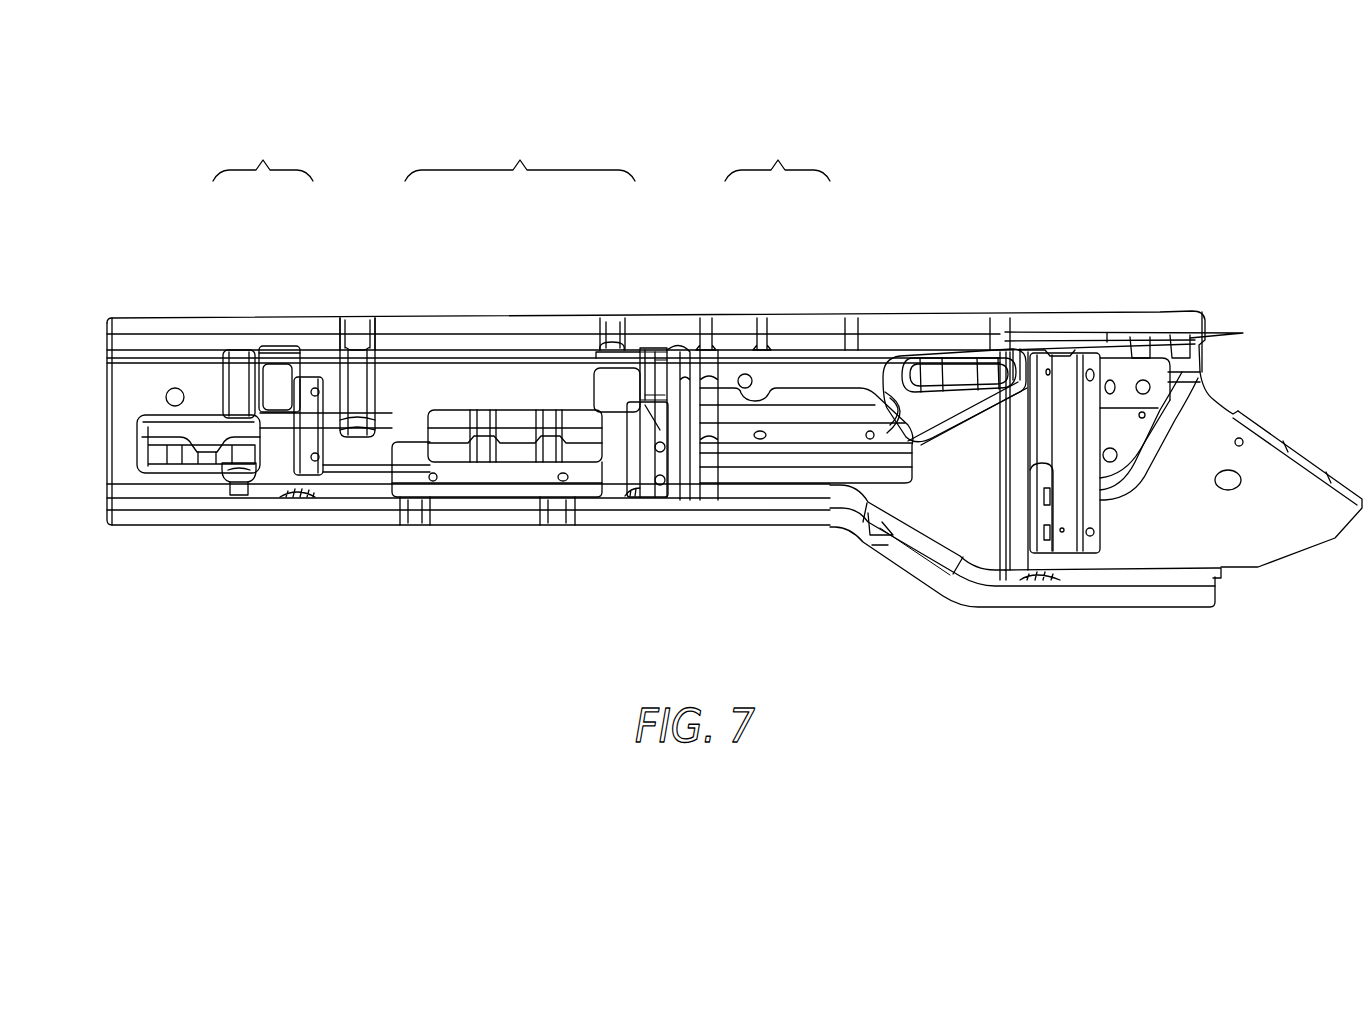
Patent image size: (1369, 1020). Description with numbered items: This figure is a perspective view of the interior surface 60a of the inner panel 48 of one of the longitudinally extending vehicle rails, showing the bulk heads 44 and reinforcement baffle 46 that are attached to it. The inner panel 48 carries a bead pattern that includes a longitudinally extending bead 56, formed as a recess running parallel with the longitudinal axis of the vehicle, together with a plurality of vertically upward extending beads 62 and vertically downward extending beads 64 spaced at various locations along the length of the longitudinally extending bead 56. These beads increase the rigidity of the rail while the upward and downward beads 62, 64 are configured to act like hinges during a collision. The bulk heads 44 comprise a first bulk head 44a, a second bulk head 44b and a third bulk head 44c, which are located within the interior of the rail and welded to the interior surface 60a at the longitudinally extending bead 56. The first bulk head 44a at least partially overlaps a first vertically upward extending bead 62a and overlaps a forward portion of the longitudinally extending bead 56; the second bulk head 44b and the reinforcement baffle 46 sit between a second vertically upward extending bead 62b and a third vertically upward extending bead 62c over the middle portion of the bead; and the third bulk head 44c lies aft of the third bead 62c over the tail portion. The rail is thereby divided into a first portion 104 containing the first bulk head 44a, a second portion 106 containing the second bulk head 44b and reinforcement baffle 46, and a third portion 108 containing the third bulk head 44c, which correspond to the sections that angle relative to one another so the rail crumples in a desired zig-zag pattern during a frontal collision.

The inner panel 48 is at (103, 392).
The first portion 104 is at (263, 154).
The second portion 106 is at (520, 154).
The third portion 108 is at (777, 154).
The vertically upward extending beads 62 is at (505, 351).
The first vertically upward extending bead 62a is at (237, 380).
The second vertically upward extending bead 62b is at (355, 385).
The third vertically upward extending bead 62c is at (667, 386).
The bulk heads 44 is at (525, 415).
The first bulk head 44a is at (171, 455).
The second bulk head 44b is at (513, 420).
The third bulk head 44c is at (810, 434).
The reinforcement baffle 46 is at (487, 483).
The longitudinally extending bead 56 is at (355, 446).
The vertically downward extending beads 64 is at (240, 483).
The interior surface 60a is at (1163, 543).